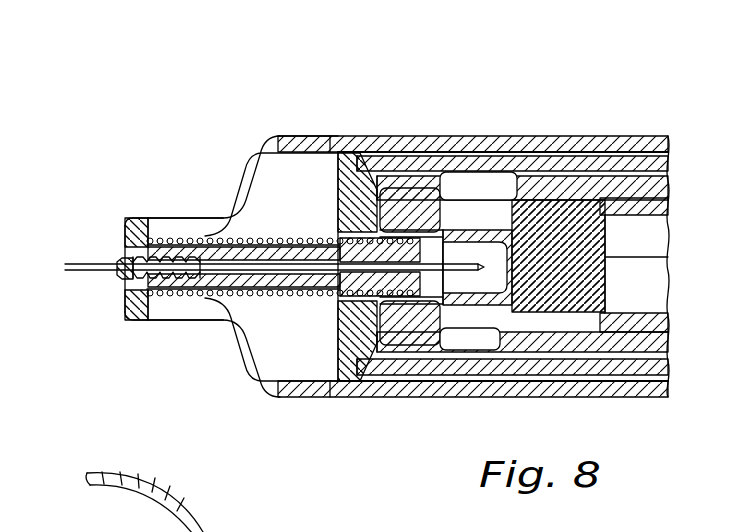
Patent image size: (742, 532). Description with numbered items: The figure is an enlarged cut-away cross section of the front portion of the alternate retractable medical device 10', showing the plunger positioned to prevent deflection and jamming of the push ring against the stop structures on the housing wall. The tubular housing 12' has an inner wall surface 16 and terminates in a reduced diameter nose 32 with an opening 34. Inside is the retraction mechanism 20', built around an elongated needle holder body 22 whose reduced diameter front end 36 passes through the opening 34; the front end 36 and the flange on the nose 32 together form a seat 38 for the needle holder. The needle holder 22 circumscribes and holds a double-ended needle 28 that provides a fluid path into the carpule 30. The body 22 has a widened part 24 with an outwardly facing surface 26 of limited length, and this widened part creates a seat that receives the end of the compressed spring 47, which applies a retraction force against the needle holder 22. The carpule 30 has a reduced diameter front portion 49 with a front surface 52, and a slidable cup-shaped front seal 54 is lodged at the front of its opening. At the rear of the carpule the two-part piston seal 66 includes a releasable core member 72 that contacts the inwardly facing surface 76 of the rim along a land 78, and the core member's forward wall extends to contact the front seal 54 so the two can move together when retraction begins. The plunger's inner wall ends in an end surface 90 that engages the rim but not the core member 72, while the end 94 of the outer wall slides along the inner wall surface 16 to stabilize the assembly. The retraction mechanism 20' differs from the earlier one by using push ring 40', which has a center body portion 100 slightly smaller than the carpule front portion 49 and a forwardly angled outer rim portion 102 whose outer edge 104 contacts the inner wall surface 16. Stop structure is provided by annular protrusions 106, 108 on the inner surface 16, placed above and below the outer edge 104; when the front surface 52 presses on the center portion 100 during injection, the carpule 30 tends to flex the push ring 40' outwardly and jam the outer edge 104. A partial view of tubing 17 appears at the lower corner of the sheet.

The retractable medical device 10' is at (170, 69).
The housing 12' is at (485, 229).
The inner wall surface 16 is at (598, 218).
The tubing 17 is at (177, 523).
The retraction mechanism 20' is at (266, 254).
The needle holder body 22 is at (209, 302).
The widened part 24 is at (312, 306).
The outwardly facing surface 26 is at (433, 152).
The double-ended needle 28 is at (68, 265).
The carpule 30 is at (655, 162).
The nose 32 is at (168, 217).
The opening 34 is at (116, 280).
The front end 36 is at (116, 258).
The seat 38 is at (145, 248).
The push ring 40' is at (207, 314).
The compressed spring 47 is at (208, 233).
The front portion 49 is at (460, 176).
The front surface 52 is at (368, 200).
The front seal 54 is at (458, 250).
The piston seal 66 is at (642, 278).
The core member 72 is at (670, 257).
The inwardly facing surface 76 is at (540, 228).
The land 78 is at (603, 325).
The end surface 90 is at (596, 231).
The end of outer wall 94 is at (362, 182).
The center body portion 100 is at (390, 326).
The outer rim portion 102 is at (377, 150).
The outer edge 104 is at (330, 140).
The annular protrusion 106 is at (353, 150).
The annular protrusion 108 is at (297, 140).